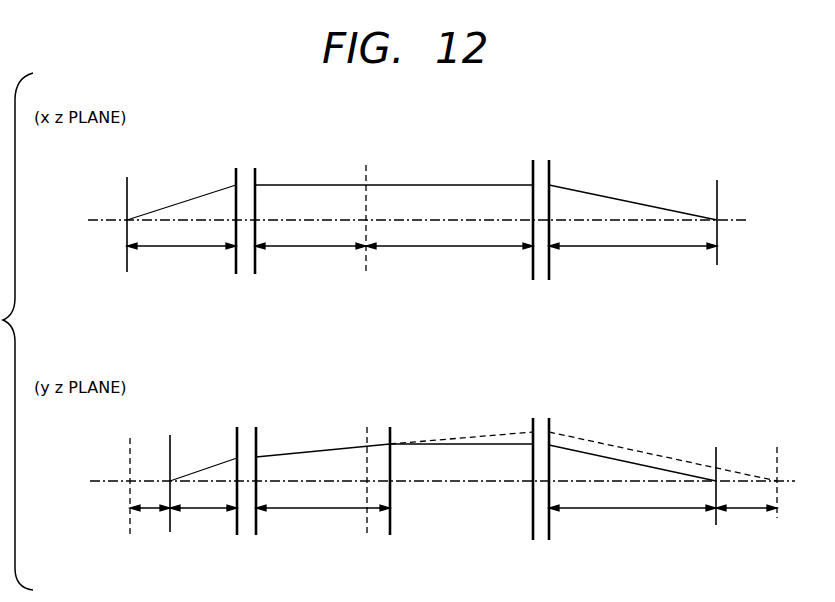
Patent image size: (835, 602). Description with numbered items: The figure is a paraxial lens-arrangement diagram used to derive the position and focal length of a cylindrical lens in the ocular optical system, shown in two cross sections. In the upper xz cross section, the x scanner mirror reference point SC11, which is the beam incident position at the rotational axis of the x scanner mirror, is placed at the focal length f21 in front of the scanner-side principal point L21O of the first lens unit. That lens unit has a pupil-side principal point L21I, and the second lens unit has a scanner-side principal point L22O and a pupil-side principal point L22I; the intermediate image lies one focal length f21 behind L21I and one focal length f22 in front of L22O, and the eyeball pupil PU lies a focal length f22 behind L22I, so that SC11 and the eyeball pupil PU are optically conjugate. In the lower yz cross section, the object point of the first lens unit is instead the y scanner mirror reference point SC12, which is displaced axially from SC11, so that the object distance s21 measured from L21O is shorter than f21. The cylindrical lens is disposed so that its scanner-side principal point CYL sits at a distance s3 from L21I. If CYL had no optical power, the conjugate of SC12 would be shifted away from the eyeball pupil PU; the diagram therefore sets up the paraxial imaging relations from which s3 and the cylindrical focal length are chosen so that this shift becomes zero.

The x scanner mirror reference point SC11 is at (124, 211).
The principal point position of lens unit 21 on the scanner side L21O is at (215, 210).
The principal point position of lens unit 21 on the eyeball pupil side L21I is at (271, 210).
The principal point position of lens unit 22 on the scanner side L22O is at (510, 208).
The principal point position of lens unit 22 on the eyeball pupil side L22I is at (565, 208).
The eyeball pupil PU is at (714, 342).
The focal length of lens unit 21 f21 is at (246, 258).
The focal length of lens unit 22 f22 is at (541, 391).
The y scanner mirror reference point SC12 is at (166, 473).
The principal point of the cylindrical lens on the scanner side CYL is at (386, 469).
The distance between y scanner reference point and scanner side principal point s21 is at (203, 522).
The position of the principal point of the cylindrical lens s3 is at (323, 521).